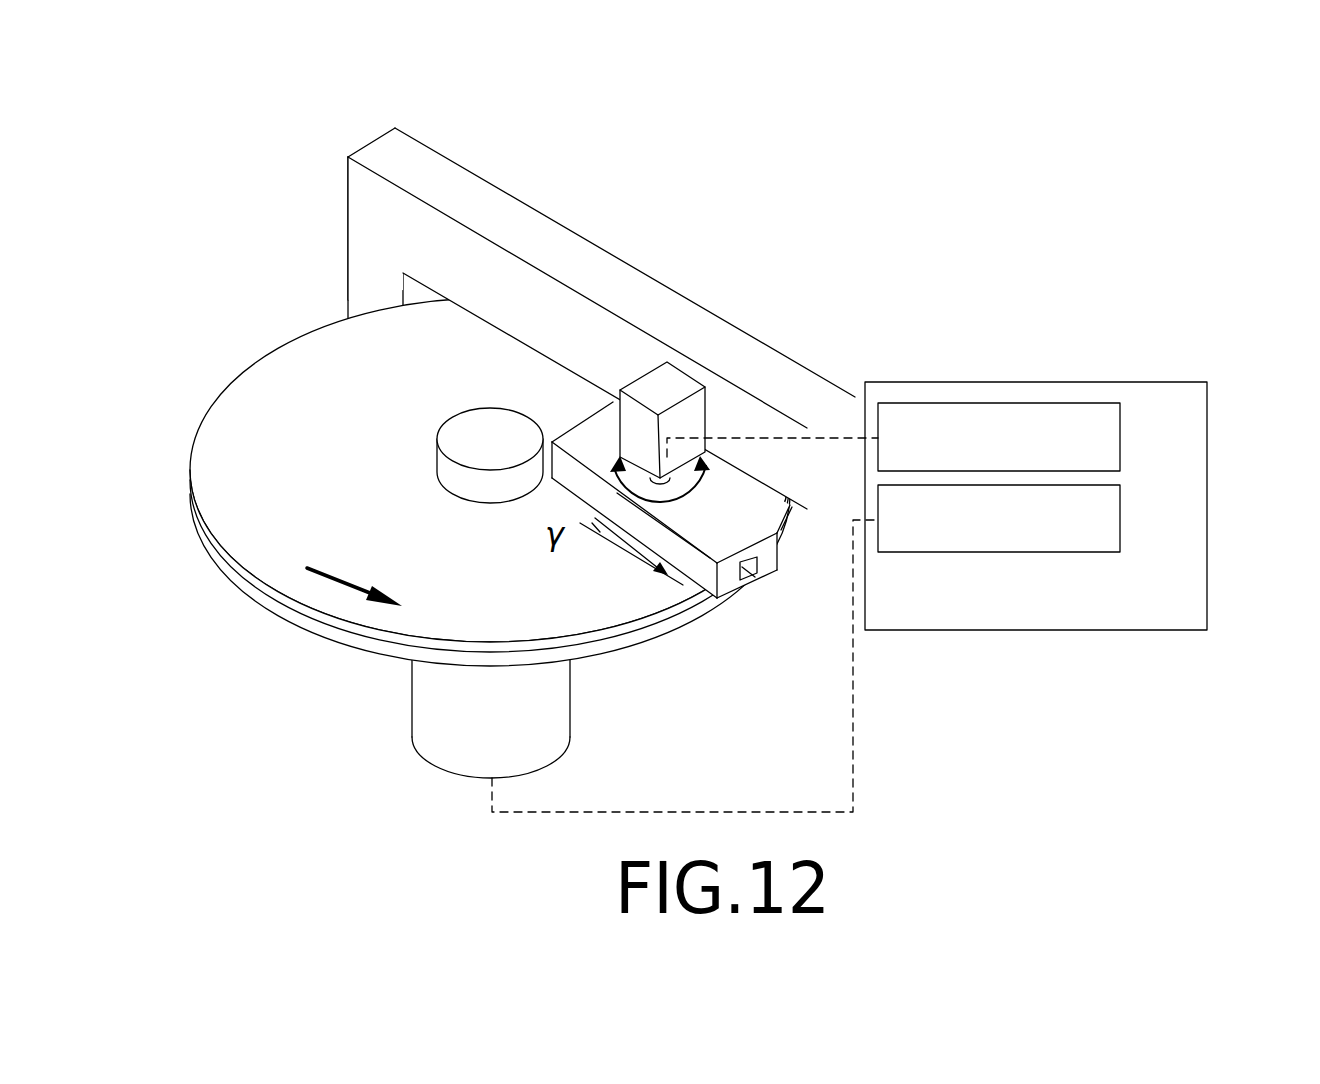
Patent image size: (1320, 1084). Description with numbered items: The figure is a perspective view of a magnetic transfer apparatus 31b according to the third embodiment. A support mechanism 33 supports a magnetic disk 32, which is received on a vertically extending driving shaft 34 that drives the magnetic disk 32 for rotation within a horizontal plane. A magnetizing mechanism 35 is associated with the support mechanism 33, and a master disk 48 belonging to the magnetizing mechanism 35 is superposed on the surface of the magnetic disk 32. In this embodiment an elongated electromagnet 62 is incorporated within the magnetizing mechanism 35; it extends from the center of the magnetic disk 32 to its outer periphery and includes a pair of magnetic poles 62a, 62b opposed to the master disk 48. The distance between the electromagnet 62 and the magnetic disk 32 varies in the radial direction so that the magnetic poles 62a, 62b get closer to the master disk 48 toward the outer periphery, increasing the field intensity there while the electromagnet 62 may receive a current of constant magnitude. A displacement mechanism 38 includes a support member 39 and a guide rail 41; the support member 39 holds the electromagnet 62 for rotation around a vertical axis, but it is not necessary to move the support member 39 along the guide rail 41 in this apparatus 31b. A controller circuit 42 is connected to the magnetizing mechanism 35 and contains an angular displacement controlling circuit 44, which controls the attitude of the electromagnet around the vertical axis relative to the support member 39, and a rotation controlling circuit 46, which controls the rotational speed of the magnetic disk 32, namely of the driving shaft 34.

The magnetic transfer apparatus 31b is at (308, 169).
The magnetic disk 32 is at (299, 627).
The support mechanism 33 is at (539, 666).
The driving shaft 34 is at (460, 716).
The magnetizing mechanism 35 is at (462, 530).
The displacement mechanism 38 is at (731, 291).
The support member 39 is at (648, 378).
The guide rail 41 is at (490, 322).
The controller circuit 42 is at (1076, 506).
The angular displacement controlling circuit 44 is at (1120, 422).
The rotation controlling circuit 46 is at (1120, 540).
The master disk 48 is at (297, 342).
The elongated electromagnet 62 is at (675, 519).
The magnetic pole 62a is at (730, 594).
The magnetic pole 62b is at (762, 577).